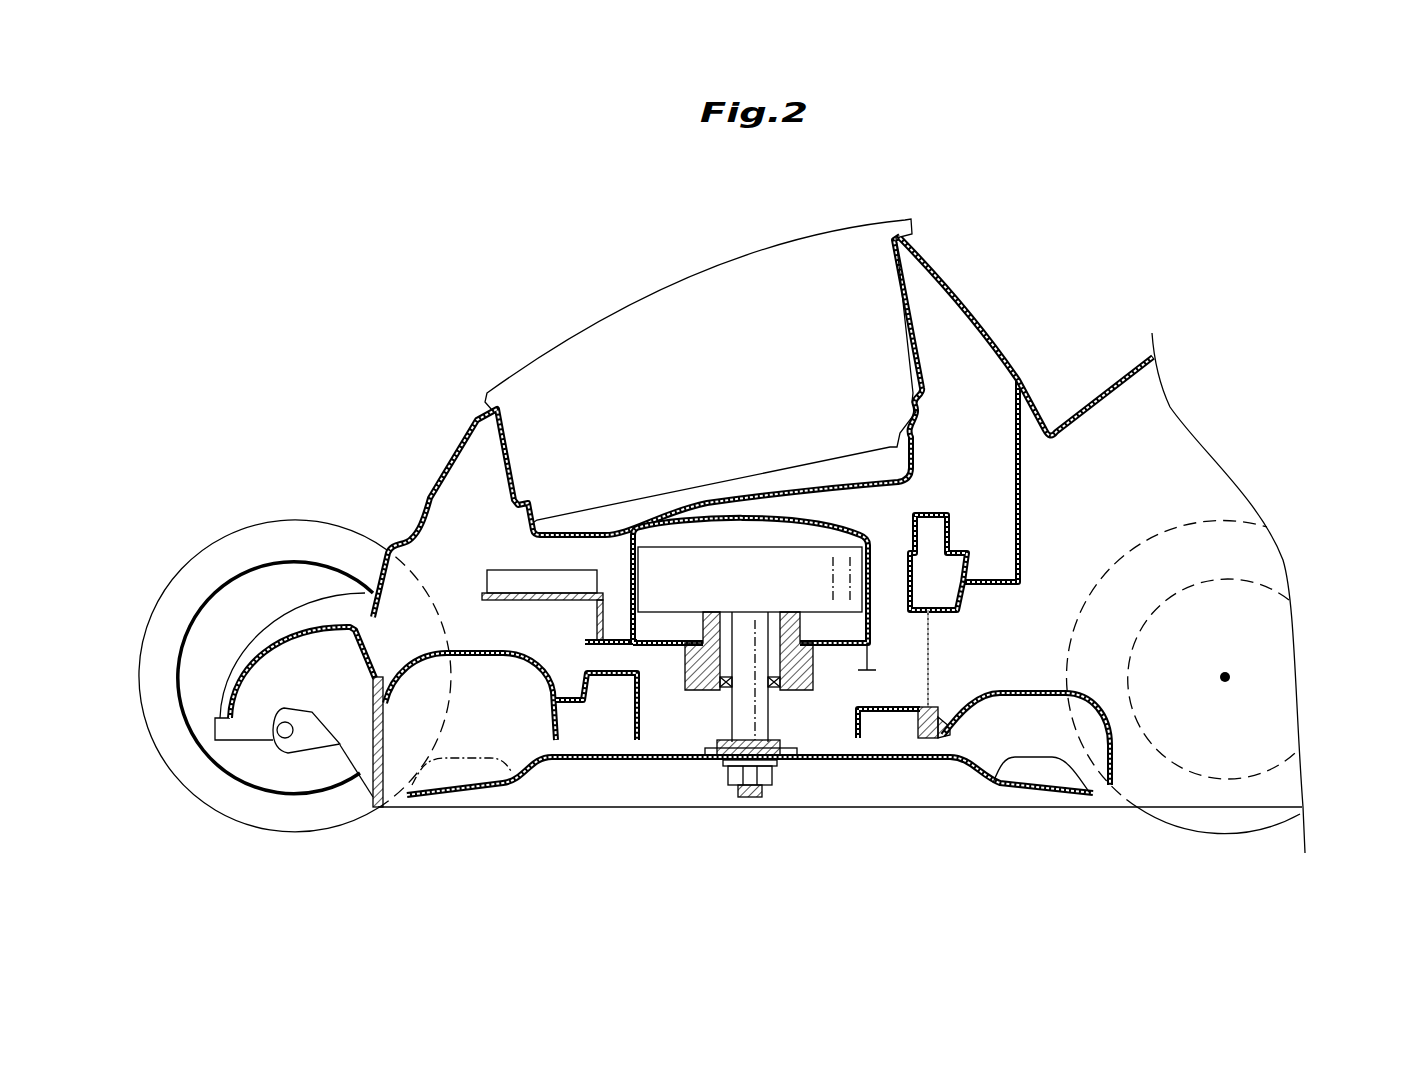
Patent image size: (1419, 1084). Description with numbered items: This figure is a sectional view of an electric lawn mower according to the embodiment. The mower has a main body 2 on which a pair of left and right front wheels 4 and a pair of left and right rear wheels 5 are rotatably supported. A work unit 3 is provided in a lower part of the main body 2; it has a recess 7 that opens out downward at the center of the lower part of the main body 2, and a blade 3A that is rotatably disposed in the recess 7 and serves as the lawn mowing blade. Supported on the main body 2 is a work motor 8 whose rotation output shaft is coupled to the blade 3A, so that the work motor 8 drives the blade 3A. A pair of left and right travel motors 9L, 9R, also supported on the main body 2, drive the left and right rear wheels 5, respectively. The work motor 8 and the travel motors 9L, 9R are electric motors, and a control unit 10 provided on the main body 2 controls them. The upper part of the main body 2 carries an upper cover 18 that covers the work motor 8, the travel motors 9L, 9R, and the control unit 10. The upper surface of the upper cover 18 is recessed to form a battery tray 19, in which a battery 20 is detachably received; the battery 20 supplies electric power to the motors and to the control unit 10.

The main body 2 is at (297, 638).
The work unit 3 is at (750, 817).
The blade 3A is at (615, 762).
The front wheels 4 is at (230, 807).
The rear wheels 5 is at (1217, 693).
The recess 7 is at (473, 657).
The work motor 8 is at (853, 593).
The left travel motor 9L is at (1217, 637).
The right travel motor 9R is at (1262, 580).
The control unit 10 is at (507, 572).
The upper cover 18 is at (985, 320).
The battery tray 19 is at (907, 287).
The battery 20 is at (567, 348).